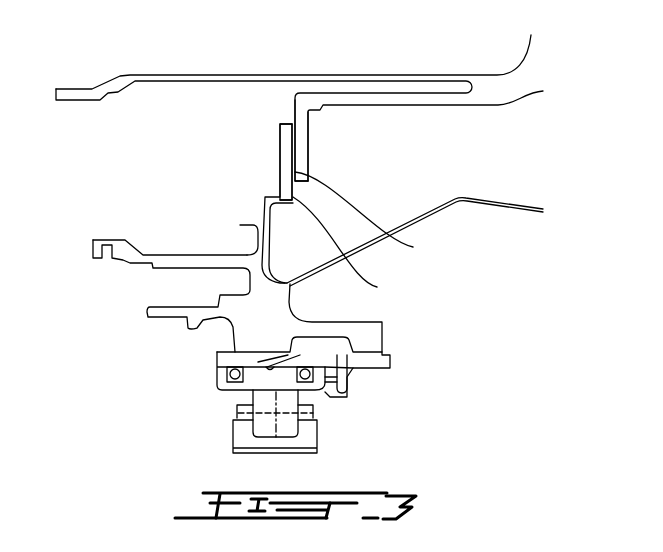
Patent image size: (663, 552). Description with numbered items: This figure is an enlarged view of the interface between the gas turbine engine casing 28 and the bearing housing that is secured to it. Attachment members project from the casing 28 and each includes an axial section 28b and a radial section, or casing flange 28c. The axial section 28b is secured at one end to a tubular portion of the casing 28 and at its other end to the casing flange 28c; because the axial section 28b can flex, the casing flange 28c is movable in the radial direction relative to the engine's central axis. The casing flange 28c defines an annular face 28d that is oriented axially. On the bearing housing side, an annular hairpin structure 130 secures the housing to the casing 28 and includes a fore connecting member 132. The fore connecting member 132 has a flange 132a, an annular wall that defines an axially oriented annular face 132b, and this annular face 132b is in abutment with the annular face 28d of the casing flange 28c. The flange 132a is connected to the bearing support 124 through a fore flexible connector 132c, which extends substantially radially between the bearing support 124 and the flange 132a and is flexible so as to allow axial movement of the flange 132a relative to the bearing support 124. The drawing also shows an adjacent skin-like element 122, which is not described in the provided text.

The casing 28 is at (373, 75).
The axial section 28b is at (412, 107).
The casing flange 28c is at (308, 142).
The annular face 28d is at (413, 247).
The skin 122 is at (488, 202).
The bearing support 124 is at (195, 351).
The annular hairpin structure 130 is at (208, 195).
The fore connecting member 132 is at (254, 149).
The flange 132a is at (278, 136).
The annular face 132b is at (377, 287).
The fore flexible connector 132c is at (240, 225).